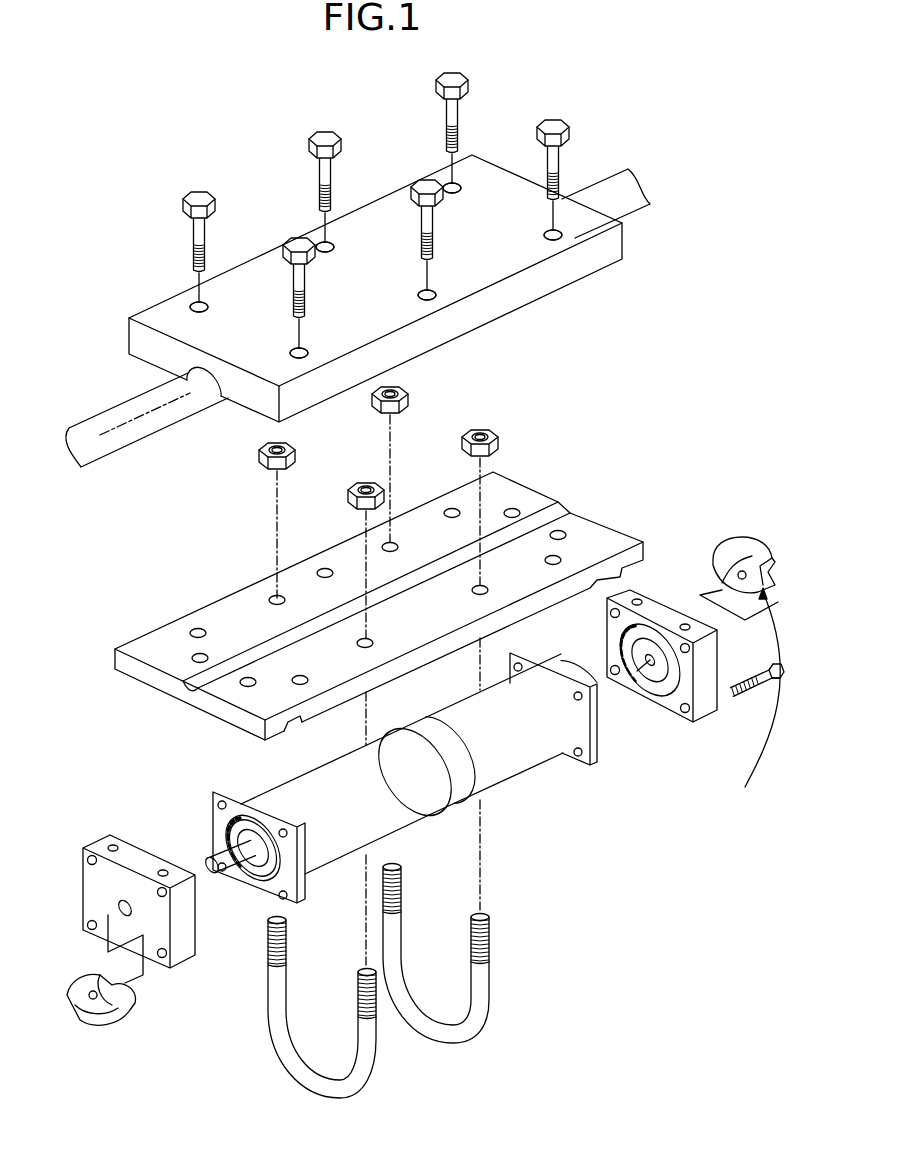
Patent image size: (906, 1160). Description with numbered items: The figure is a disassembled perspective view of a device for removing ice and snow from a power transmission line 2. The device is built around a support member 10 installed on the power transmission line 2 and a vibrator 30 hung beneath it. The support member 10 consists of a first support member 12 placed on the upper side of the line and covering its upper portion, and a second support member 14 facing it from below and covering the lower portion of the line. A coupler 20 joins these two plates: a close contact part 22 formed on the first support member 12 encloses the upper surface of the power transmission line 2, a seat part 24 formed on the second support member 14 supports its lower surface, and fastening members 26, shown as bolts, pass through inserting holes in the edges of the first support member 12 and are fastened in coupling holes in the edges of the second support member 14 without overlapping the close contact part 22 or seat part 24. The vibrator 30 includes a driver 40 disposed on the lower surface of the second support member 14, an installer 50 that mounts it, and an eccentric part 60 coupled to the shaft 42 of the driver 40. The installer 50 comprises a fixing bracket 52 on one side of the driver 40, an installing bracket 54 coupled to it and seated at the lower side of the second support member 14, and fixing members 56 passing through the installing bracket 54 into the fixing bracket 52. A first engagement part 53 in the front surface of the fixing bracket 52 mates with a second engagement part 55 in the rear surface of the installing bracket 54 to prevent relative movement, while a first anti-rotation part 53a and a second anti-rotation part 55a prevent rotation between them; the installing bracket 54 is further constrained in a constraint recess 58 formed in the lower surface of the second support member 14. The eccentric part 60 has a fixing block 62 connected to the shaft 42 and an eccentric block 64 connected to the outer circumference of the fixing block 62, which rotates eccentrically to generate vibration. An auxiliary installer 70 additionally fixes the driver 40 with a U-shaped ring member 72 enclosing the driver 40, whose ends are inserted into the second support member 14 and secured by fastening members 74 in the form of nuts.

The power transmission line 2 is at (611, 178).
The support member 10 is at (379, 447).
The first support member 12 is at (481, 322).
The second support member 14 is at (529, 497).
The coupler 20 is at (354, 382).
The close contact part 22 is at (206, 380).
The seat part 24 is at (248, 657).
The fastening members 26 is at (295, 318).
The vibrator 30 is at (425, 820).
The driver 40 is at (533, 760).
The shaft 42 is at (227, 865).
The installer 50 is at (647, 700).
The fixing bracket 52 is at (590, 738).
The first engagement part 53 is at (225, 823).
The first anti-rotation part 53a is at (227, 837).
The installing bracket 54 is at (662, 702).
The second engagement part 55 is at (623, 637).
The second anti-rotation part 55a is at (618, 647).
The fixing members 56 is at (740, 722).
The constraint recess 58 is at (297, 725).
The eccentric part 60 is at (423, 820).
The fixing block 62 is at (123, 982).
The eccentric block 64 is at (101, 1024).
The auxiliary installer 70 is at (417, 742).
The ring member 72 is at (485, 957).
The fastening members 74 is at (374, 508).